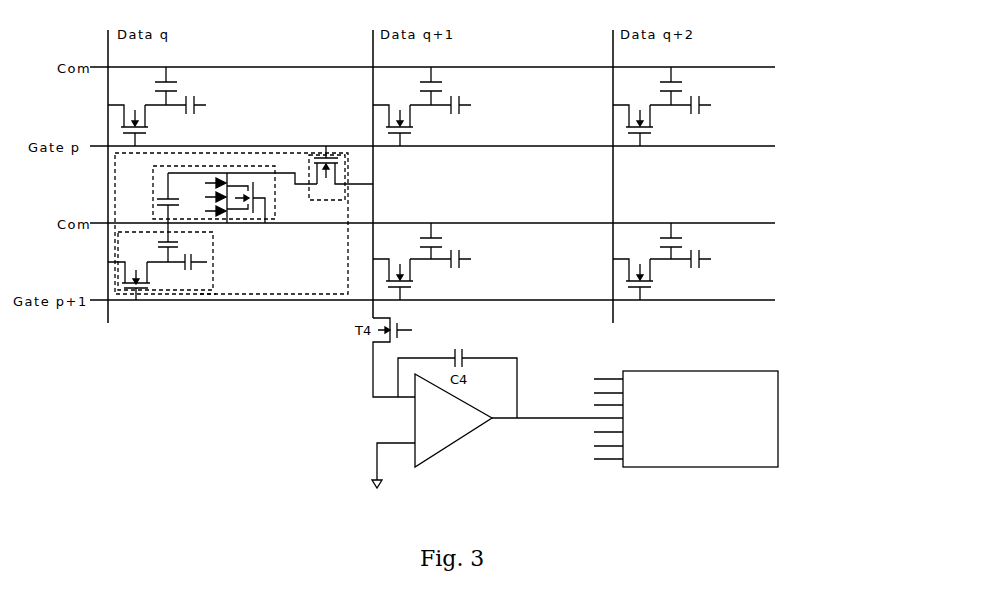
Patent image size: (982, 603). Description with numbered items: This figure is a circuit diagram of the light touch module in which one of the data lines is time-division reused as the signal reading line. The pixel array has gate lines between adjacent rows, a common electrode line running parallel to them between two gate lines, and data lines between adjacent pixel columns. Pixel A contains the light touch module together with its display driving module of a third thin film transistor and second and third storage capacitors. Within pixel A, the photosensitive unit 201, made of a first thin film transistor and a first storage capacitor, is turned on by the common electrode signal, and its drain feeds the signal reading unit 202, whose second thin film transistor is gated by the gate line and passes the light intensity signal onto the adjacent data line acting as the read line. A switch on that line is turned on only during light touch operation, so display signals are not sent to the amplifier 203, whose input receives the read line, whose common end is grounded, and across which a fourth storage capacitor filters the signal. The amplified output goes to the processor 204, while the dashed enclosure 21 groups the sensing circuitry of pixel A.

The sensing unit 21 is at (172, 295).
The photosensitive unit 201 is at (262, 218).
The signal reading unit 202 is at (327, 202).
The pixel A is at (208, 295).
The amplifier 203 is at (438, 445).
The processor 204 is at (765, 453).